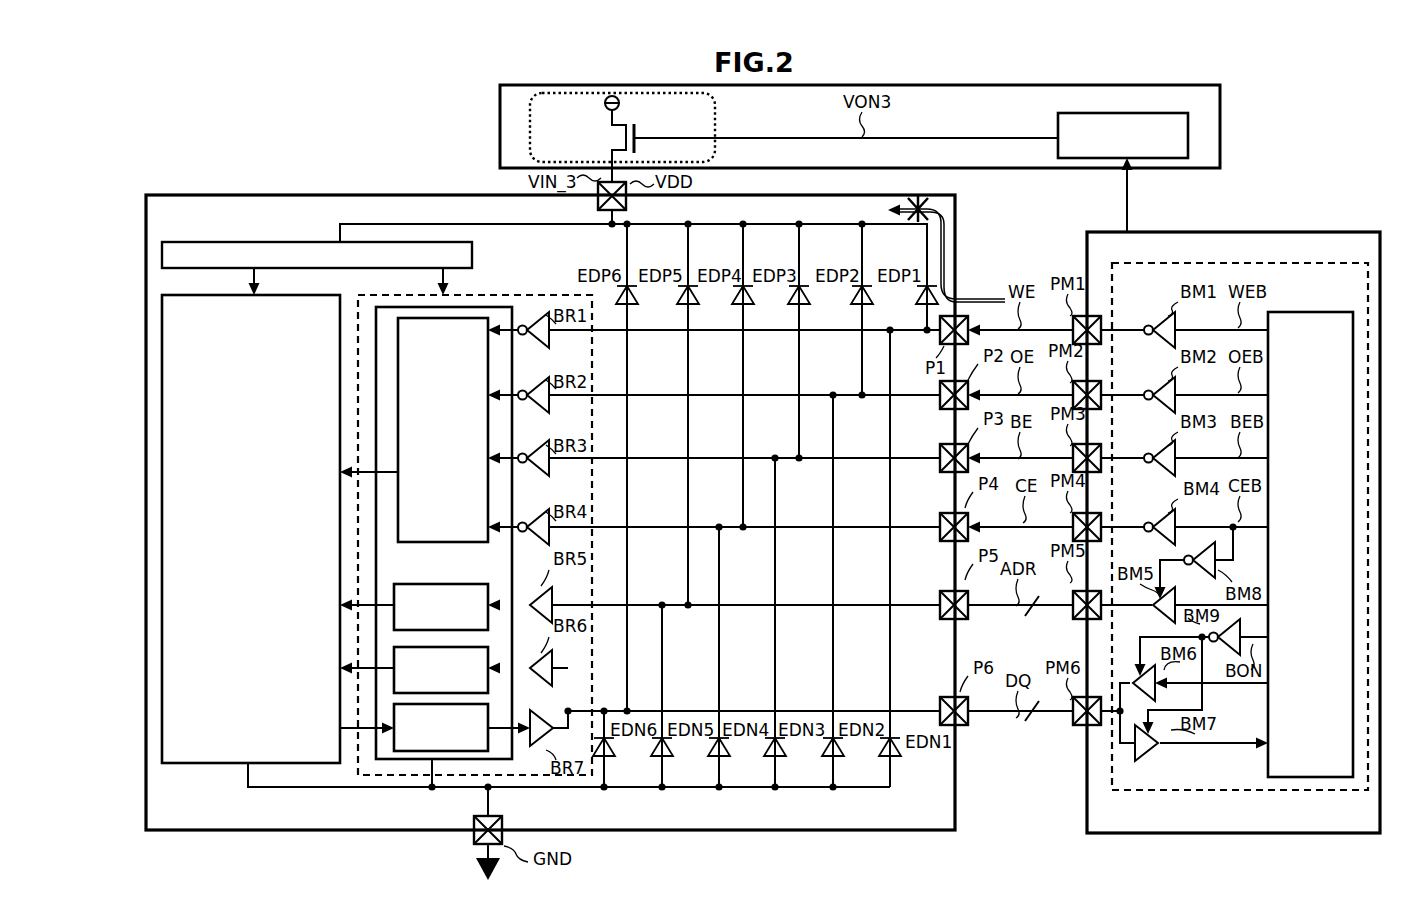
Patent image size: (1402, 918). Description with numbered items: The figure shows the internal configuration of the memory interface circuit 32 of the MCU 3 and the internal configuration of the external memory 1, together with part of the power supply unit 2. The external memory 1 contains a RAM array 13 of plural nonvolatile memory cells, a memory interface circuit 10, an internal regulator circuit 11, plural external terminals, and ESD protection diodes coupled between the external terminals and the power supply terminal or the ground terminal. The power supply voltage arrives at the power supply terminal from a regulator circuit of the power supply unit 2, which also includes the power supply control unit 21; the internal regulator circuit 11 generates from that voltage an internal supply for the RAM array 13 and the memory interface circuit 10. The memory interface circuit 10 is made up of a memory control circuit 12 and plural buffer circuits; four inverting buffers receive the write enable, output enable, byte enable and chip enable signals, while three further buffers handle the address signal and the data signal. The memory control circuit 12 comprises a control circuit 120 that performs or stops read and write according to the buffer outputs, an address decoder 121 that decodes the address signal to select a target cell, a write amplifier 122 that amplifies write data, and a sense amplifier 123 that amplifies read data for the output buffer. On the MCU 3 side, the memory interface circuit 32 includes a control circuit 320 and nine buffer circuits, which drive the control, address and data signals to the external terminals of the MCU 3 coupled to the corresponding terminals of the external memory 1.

The external memory 1 is at (255, 194).
The power supply unit 2 is at (500, 108).
The microcontroller 3 is at (1341, 232).
The memory interface circuit 10 is at (550, 294).
The internal regulator circuit 11 is at (221, 242).
The memory control circuit 12 is at (504, 306).
The RAM array 13 is at (190, 766).
The power supply control unit 21 is at (1058, 117).
The memory interface circuit 32 is at (1279, 263).
The control circuit 120 is at (468, 544).
The address decoder 121 is at (412, 583).
The write amplifier 122 is at (489, 658).
The sense amplifier 123 is at (406, 752).
The control circuit 320 is at (1304, 312).